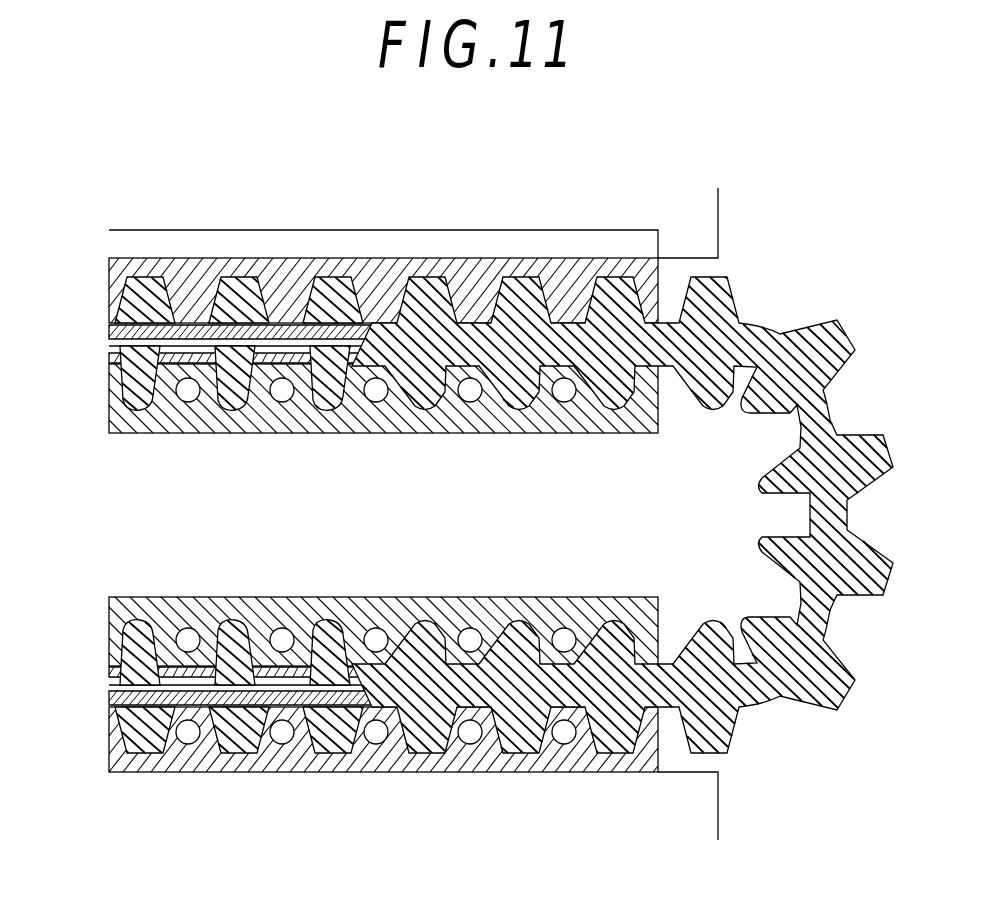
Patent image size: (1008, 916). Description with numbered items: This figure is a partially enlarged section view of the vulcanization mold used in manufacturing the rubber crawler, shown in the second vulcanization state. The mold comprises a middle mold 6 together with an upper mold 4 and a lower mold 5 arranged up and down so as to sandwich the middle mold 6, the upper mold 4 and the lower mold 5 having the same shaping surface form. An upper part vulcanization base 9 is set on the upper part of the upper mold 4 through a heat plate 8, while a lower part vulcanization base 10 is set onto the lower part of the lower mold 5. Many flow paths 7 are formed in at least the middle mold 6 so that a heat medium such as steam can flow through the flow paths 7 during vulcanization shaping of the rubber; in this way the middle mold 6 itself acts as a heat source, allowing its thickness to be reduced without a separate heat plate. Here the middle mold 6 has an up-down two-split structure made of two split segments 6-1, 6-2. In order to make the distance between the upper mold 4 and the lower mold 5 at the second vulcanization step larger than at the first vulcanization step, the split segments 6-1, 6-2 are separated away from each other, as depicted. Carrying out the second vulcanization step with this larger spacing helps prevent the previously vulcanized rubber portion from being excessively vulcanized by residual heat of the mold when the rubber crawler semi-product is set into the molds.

The upper mold 4 is at (120, 268).
The lower mold 5 is at (120, 768).
The middle mold 6 is at (539, 464).
The split segment 6-1 is at (440, 424).
The split segment 6-2 is at (427, 599).
The flow paths 7 is at (189, 394).
The heat plate 8 is at (330, 243).
The upper part vulcanization base 9 is at (439, 202).
The lower part vulcanization base 10 is at (442, 845).